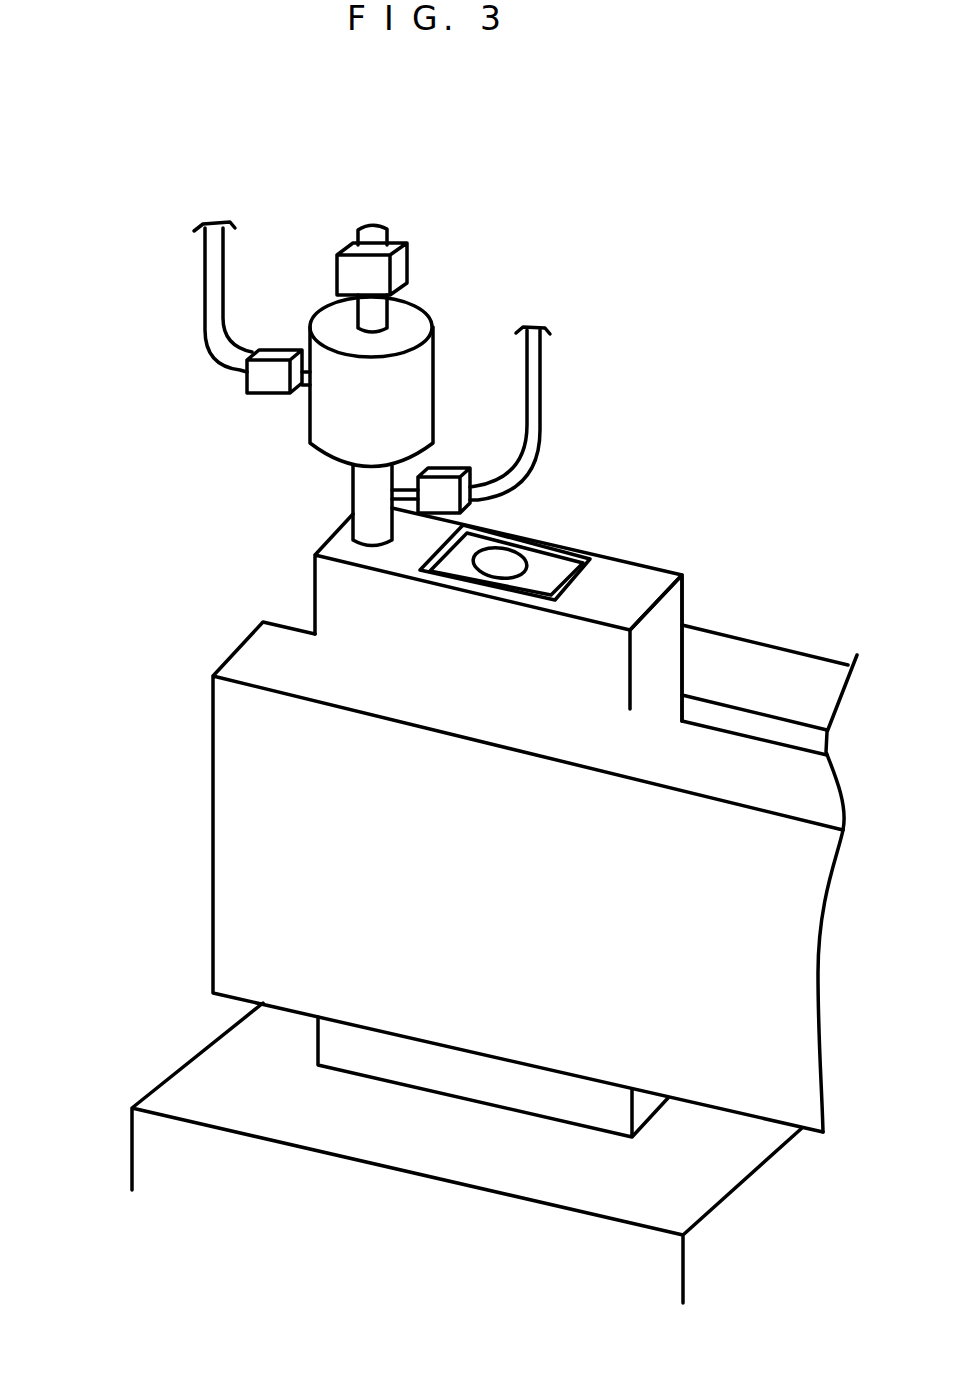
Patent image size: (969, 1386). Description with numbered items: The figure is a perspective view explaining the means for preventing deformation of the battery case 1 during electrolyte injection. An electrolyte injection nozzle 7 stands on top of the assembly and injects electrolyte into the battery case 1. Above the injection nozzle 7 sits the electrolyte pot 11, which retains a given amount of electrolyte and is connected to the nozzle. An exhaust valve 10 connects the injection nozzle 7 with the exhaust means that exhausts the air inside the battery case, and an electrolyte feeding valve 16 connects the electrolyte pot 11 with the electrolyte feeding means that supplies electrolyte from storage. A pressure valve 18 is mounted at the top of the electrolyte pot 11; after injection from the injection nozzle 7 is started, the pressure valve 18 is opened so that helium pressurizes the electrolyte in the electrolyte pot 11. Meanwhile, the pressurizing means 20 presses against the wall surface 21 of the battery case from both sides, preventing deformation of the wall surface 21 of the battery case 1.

The battery case 1 is at (668, 613).
The injection nozzle 7 is at (365, 505).
The exhaust valve 10 is at (453, 475).
The electrolyte pot 11 is at (417, 367).
The electrolyte feeding valve 16 is at (250, 378).
The pressure valve 18 is at (410, 257).
The pressurizing means 20 is at (365, 607).
The wall surface 21 is at (282, 845).